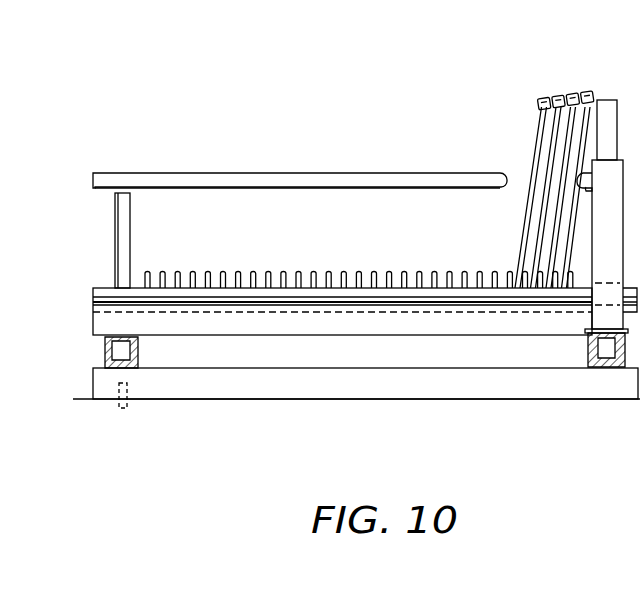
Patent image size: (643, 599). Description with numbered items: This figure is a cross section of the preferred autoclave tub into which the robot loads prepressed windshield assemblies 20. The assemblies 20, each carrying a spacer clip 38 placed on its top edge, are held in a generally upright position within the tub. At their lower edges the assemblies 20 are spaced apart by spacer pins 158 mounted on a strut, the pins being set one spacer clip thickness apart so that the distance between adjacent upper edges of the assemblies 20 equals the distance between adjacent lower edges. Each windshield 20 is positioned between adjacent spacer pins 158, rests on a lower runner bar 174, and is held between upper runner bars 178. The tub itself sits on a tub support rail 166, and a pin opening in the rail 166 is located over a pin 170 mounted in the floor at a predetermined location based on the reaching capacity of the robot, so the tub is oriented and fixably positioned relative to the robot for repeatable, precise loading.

The prepressed windshield assembly 20 is at (540, 136).
The spacer clip 38 is at (542, 94).
The spacer pins 158 is at (161, 273).
The tub support rail 166 is at (300, 400).
The pin 170 is at (127, 408).
The lower runner bar 174 is at (93, 294).
The upper runner bar 178 is at (166, 173).